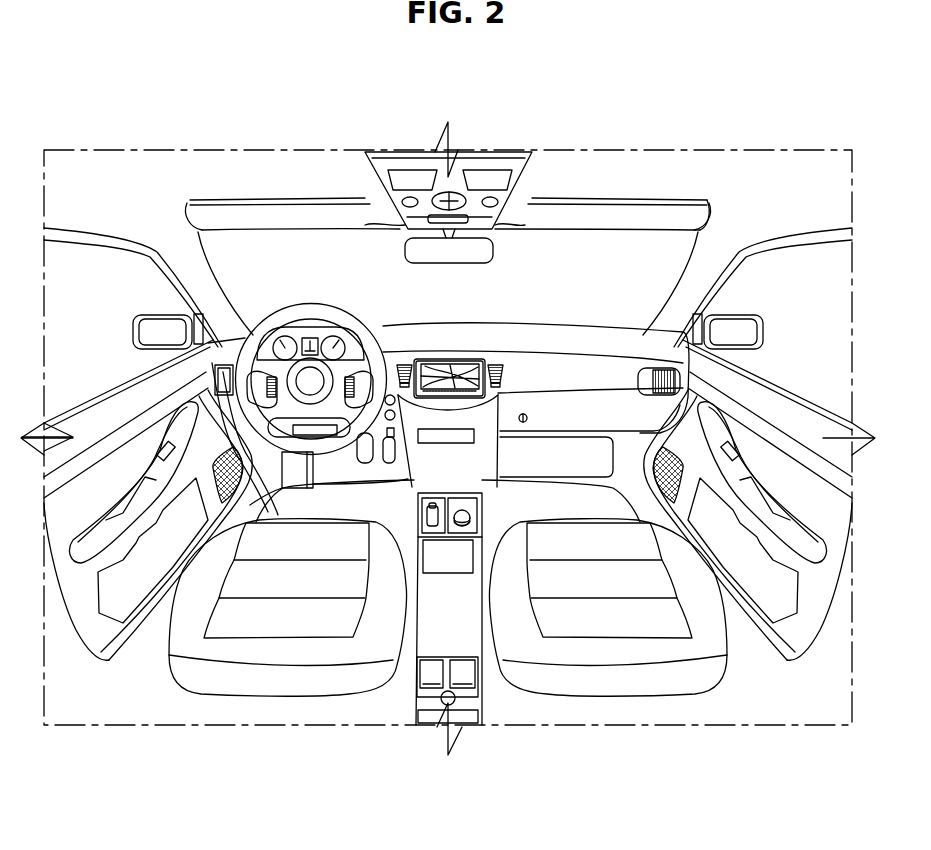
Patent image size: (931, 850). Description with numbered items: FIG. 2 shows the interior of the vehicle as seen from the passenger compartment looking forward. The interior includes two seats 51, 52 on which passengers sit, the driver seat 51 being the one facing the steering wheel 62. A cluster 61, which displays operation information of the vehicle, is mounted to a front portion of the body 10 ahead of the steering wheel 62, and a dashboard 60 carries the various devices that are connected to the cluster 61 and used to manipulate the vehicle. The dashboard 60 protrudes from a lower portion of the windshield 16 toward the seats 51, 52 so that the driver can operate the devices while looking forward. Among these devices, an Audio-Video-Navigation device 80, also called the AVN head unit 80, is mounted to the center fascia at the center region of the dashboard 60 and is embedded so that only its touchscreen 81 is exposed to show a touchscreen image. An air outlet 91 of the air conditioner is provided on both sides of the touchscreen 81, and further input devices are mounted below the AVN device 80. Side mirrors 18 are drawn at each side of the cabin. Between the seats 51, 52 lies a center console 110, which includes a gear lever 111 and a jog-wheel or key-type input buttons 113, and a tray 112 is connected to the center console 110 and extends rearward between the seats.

The body 10 is at (277, 129).
The windshield 16 is at (562, 240).
The side mirror 18 is at (155, 325).
The driver seat 51 is at (267, 677).
The seat 52 is at (615, 677).
The dashboard 60 is at (603, 340).
The cluster 61 is at (320, 330).
The steering wheel 62 is at (305, 324).
The Audio-Video-Navigation (AVN) device 80 is at (473, 363).
The touchscreen 81 is at (438, 363).
The air outlet 91 is at (213, 372).
The center console 110 is at (466, 495).
The gear lever 111 is at (427, 513).
The tray 112 is at (435, 608).
The input buttons 113 is at (467, 514).